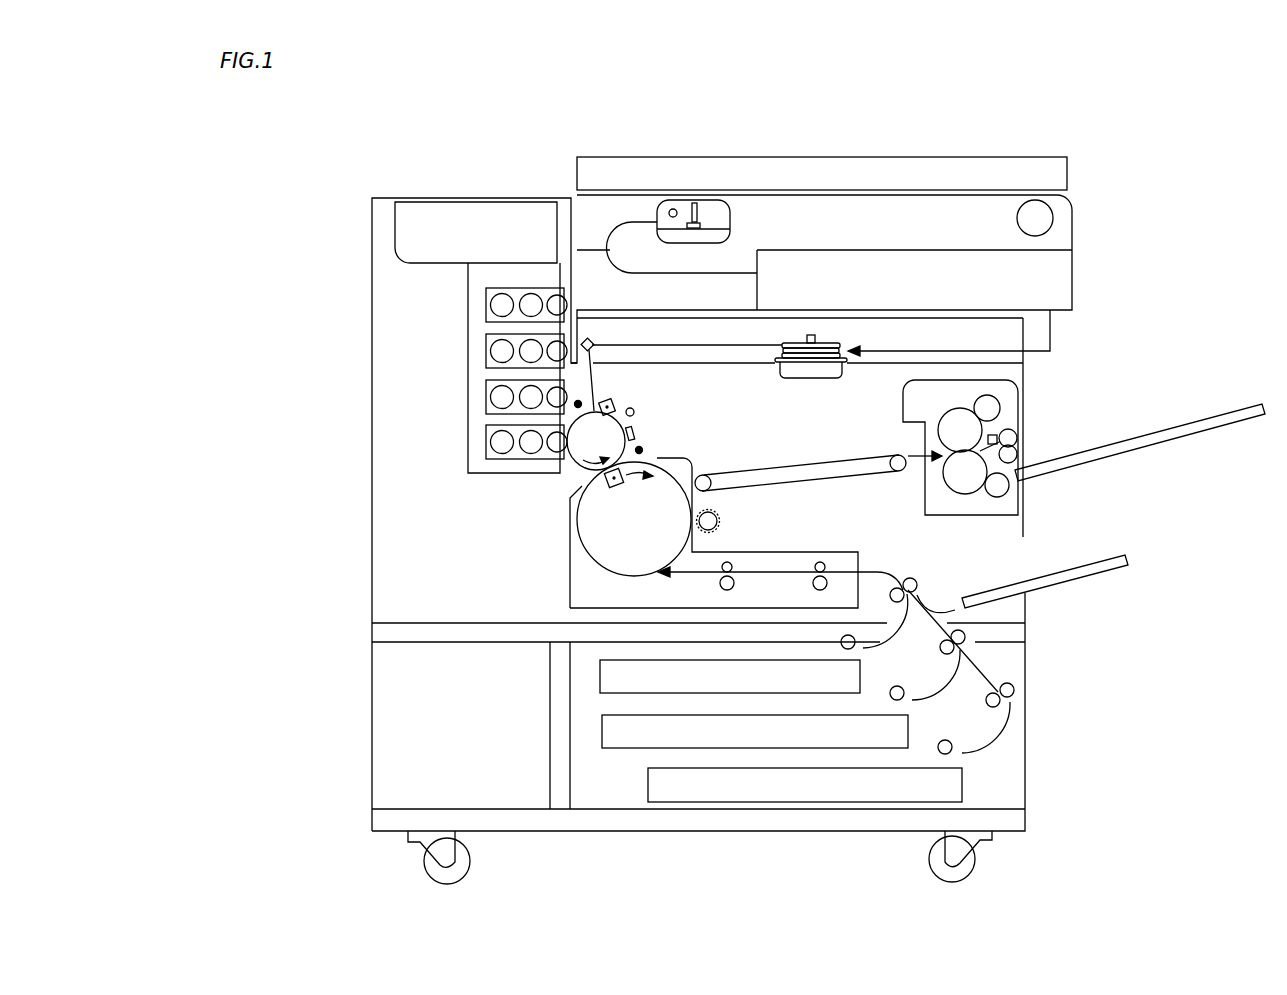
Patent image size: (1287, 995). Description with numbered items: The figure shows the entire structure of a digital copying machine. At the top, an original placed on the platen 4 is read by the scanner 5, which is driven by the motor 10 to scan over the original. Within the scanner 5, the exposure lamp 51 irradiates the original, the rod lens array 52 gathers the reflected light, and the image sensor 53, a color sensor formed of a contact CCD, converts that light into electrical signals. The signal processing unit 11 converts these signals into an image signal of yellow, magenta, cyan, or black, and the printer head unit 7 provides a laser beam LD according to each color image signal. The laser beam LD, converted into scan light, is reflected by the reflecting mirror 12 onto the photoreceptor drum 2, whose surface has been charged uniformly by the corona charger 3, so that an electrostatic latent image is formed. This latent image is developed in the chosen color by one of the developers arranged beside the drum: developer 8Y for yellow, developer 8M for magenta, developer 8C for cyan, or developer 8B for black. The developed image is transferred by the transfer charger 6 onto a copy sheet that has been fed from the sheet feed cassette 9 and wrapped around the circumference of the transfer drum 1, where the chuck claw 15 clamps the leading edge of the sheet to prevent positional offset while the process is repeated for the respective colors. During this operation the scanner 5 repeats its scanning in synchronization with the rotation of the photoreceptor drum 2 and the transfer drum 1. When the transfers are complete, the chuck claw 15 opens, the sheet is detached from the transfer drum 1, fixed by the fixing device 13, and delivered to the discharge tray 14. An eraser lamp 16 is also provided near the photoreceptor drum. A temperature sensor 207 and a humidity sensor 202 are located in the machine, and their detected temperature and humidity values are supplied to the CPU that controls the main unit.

The transfer drum 1 is at (578, 531).
The photoreceptor drum 2 is at (583, 473).
The corona charger 3 is at (601, 402).
The platen 4 is at (875, 190).
The scanner 5 is at (722, 180).
The exposure lamp 51 is at (675, 208).
The rod lens array 52 is at (700, 203).
The image sensor 53 is at (705, 224).
The transfer charger 6 is at (618, 486).
The printer head unit 7 is at (828, 342).
The developer 8Y is at (486, 302).
The developer 8M is at (486, 347).
The developer 8C is at (486, 393).
The developer 8B is at (486, 439).
The sheet feed cassette 9 is at (838, 736).
The motor 10 is at (1033, 208).
The signal processing unit 11 is at (933, 260).
The reflecting mirror 12 is at (592, 341).
The fixing device 13 is at (1003, 395).
The discharge tray 14 is at (1167, 432).
The chuck claw 15 is at (668, 467).
The eraser lamp 16 is at (634, 409).
The humidity sensor 202 is at (641, 447).
The temperature sensor 207 is at (580, 400).
The laser beam LD is at (681, 346).